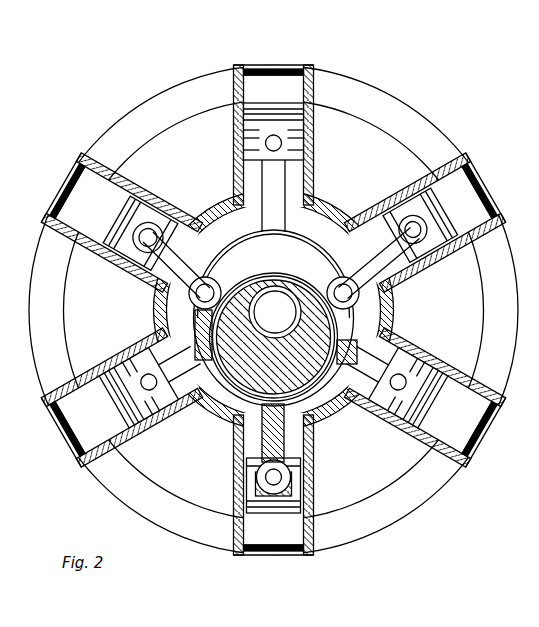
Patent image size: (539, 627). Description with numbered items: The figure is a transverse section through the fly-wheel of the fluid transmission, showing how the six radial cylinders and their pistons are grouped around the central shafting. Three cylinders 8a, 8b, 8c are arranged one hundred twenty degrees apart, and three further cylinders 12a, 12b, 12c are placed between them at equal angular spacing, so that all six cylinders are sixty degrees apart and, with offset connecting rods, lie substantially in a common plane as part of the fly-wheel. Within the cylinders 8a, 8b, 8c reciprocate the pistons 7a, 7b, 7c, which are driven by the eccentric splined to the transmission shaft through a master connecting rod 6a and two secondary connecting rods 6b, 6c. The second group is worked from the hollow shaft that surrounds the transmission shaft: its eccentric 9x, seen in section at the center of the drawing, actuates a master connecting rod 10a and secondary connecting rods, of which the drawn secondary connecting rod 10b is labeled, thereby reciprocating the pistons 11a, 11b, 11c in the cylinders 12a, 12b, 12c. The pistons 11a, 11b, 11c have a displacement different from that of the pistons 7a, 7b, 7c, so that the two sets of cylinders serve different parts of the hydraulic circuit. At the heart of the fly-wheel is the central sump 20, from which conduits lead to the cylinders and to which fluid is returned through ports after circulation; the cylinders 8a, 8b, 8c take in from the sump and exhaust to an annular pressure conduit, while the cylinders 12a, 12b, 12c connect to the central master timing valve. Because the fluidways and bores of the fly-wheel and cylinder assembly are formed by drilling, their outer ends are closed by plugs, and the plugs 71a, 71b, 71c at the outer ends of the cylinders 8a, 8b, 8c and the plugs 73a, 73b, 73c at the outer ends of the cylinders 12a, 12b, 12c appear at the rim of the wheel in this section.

The piston 7a is at (277, 119).
The piston 7b is at (122, 420).
The piston 7c is at (424, 423).
The cylinder 8a is at (316, 150).
The cylinder 8b is at (140, 440).
The cylinder 8c is at (388, 436).
The plug 71a is at (282, 70).
The plug 71b is at (72, 432).
The plug 71c is at (484, 428).
The cylinder 12a is at (255, 499).
The cylinder 12b is at (441, 210).
The cylinder 12c is at (106, 213).
The plug 73a is at (276, 556).
The plug 73b is at (491, 196).
The plug 73c is at (70, 196).
The piston 11a is at (266, 520).
The piston 11b is at (440, 222).
The piston 11c is at (122, 220).
The master connecting rod 6a is at (271, 196).
The secondary connecting rod 6b is at (160, 306).
The secondary connecting rod 6c is at (396, 318).
The master connecting rod 10a is at (264, 412).
The secondary connecting rod 10b is at (196, 272).
The central sump 20 is at (274, 312).
The eccentric 9x is at (255, 355).